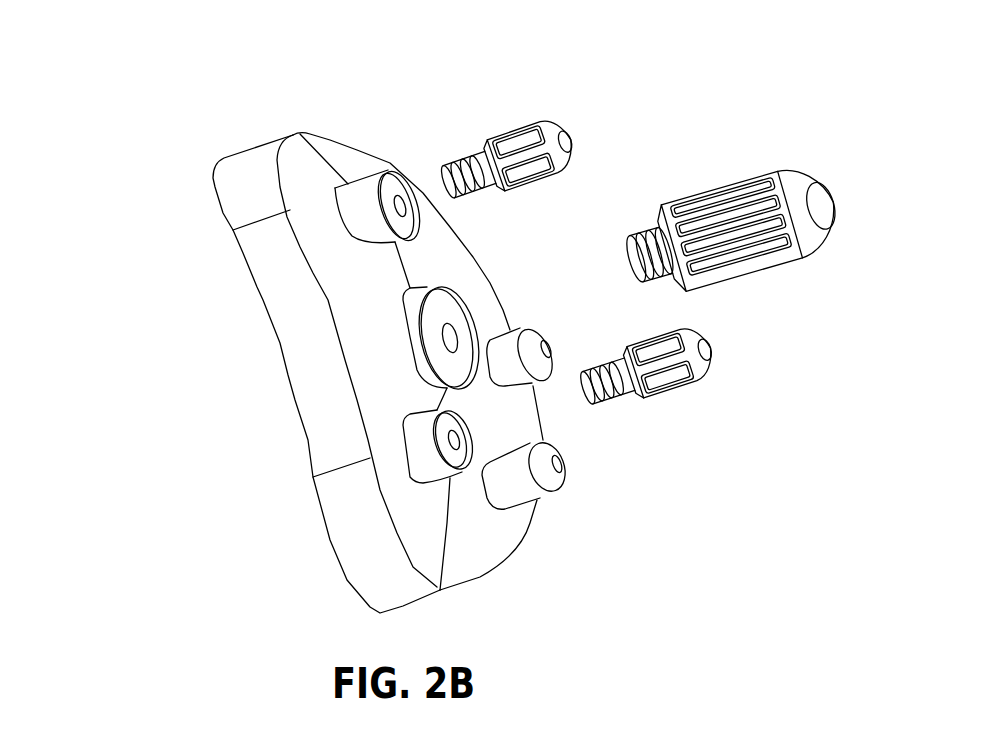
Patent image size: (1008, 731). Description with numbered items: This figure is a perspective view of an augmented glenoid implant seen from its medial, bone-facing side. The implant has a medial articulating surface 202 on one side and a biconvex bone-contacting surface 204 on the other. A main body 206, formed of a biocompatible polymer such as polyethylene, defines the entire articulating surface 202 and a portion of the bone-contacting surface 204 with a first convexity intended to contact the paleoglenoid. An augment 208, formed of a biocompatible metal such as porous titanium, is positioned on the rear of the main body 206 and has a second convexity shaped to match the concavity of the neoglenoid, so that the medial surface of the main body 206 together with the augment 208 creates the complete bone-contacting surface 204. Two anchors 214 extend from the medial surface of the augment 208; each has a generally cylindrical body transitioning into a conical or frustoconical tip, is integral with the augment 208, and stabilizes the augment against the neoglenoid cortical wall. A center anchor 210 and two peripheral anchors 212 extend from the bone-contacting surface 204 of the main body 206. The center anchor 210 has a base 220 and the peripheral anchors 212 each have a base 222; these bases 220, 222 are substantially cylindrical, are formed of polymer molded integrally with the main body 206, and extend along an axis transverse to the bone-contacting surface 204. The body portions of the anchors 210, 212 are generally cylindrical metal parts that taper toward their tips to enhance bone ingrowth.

The medial articulating surface 202 is at (195, 518).
The bone-contacting surface 204 is at (546, 594).
The main body 206 is at (233, 200).
The augment 208 is at (495, 545).
The center anchor 210 is at (797, 132).
The peripheral anchor 212 is at (536, 87).
The anchor 214 is at (533, 357).
The base 220 is at (420, 345).
The base 222 is at (365, 197).